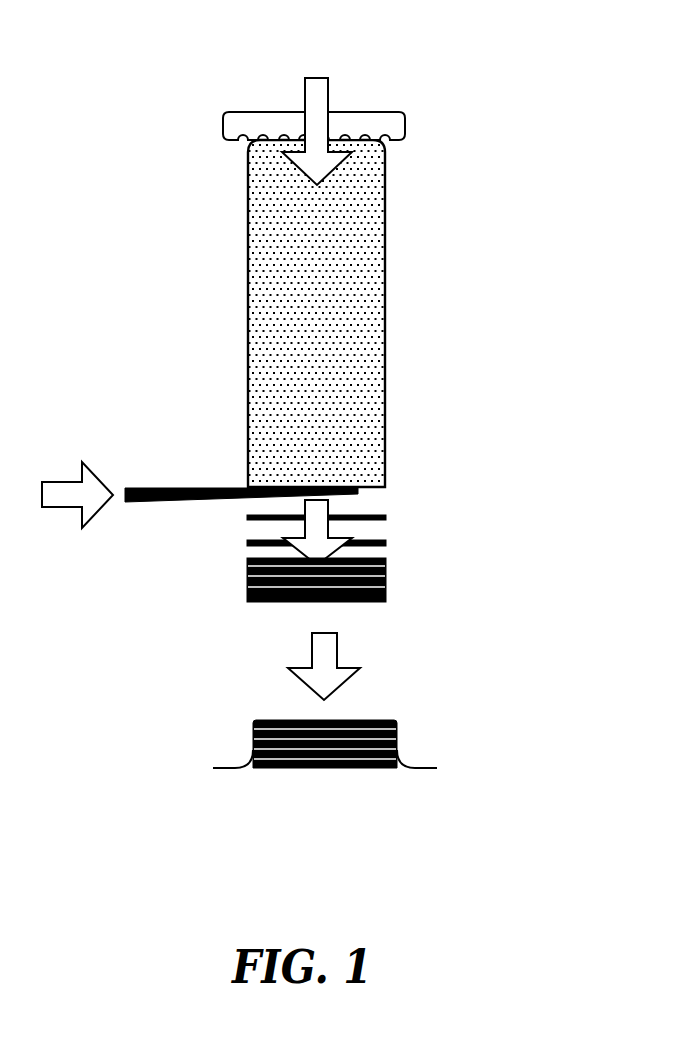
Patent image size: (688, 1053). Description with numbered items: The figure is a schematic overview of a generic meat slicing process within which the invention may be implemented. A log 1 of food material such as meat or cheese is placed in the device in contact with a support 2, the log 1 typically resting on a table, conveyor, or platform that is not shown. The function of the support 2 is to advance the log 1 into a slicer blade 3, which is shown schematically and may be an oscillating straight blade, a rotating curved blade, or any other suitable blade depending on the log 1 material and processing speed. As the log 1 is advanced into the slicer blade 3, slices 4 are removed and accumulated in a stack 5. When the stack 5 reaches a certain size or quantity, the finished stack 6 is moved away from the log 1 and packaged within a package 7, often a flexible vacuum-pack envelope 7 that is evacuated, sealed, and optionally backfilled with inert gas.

The log 1 is at (247, 347).
The support 2 is at (255, 127).
The slicer blade 3 is at (137, 487).
The slices 4 is at (386, 538).
The stack 5 is at (387, 596).
The finished stack 6 is at (392, 720).
The package 7 is at (401, 763).